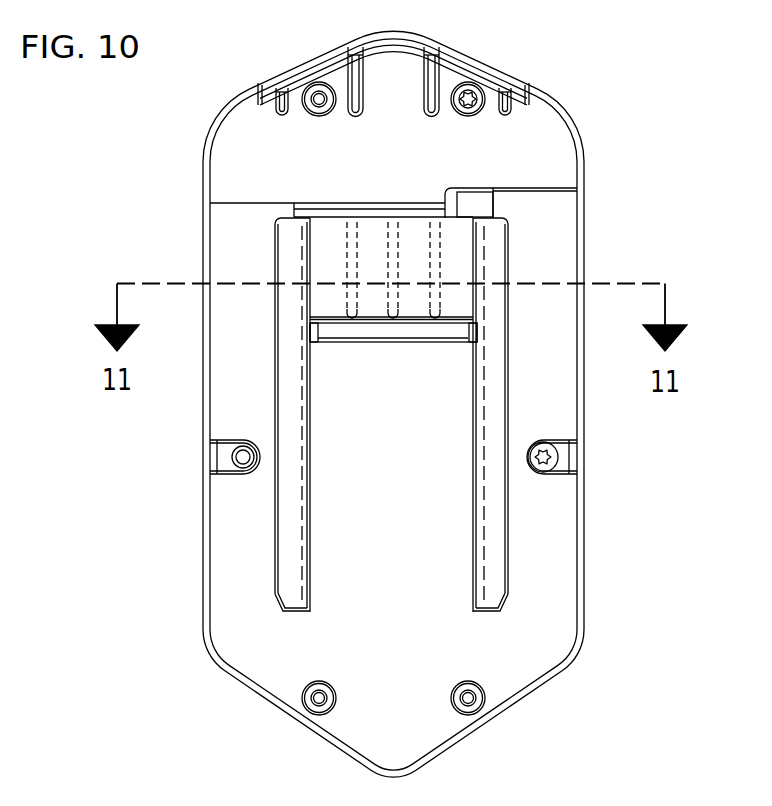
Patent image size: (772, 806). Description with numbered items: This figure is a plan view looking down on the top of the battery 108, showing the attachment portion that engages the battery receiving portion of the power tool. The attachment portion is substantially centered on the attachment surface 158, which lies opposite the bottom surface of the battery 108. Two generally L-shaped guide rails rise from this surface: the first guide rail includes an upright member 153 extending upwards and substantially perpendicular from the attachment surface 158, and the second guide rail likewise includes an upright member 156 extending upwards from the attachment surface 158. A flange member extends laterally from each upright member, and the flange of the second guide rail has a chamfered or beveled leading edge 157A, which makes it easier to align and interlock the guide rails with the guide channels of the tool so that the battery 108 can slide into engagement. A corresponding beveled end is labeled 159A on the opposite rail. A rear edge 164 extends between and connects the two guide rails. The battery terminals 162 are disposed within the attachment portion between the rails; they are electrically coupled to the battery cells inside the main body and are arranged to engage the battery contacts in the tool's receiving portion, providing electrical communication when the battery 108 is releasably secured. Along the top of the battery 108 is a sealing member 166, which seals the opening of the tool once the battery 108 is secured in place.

The battery 108 is at (590, 88).
The sealing member 166 is at (455, 40).
The rear edge 164 is at (427, 218).
The battery terminals 162 is at (410, 258).
The upright member 156 is at (302, 365).
The upright member 153 is at (487, 410).
The chamfered or beveled leading edge 157A is at (283, 598).
The right rail stop 159A is at (502, 600).
The attachment surface 158 is at (395, 665).